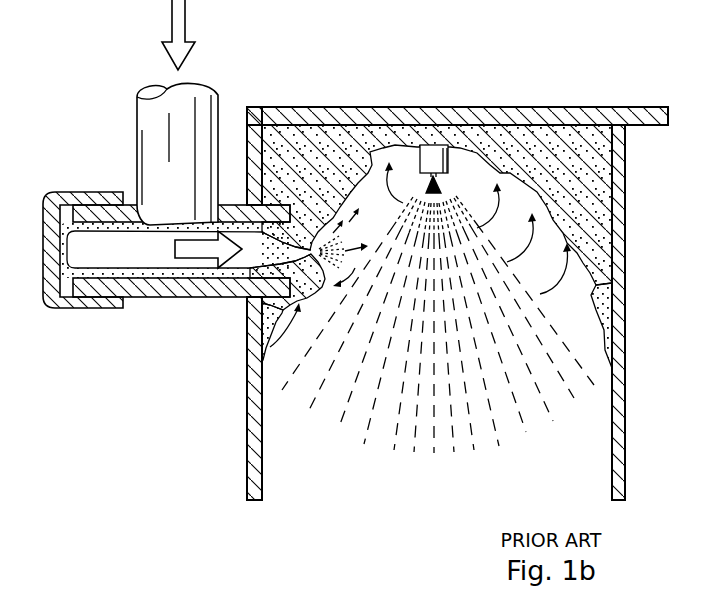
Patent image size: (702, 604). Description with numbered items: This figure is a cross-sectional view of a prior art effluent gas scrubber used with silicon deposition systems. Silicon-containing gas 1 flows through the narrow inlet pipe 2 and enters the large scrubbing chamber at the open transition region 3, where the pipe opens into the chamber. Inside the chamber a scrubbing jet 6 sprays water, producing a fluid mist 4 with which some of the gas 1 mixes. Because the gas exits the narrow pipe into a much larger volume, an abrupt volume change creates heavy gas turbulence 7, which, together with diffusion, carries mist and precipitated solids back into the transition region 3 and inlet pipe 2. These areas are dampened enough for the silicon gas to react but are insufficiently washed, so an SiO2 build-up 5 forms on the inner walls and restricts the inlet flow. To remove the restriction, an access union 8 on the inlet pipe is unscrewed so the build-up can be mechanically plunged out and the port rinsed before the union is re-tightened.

The gas 1 is at (178, 18).
The inlet pipe 2 is at (150, 120).
The transition region 3 is at (258, 250).
The fluid mist 4 is at (597, 287).
The build-up 5 is at (590, 163).
The scrubbing jet 6 is at (433, 146).
The gas turbulence 7 is at (367, 200).
The access union 8 is at (60, 298).